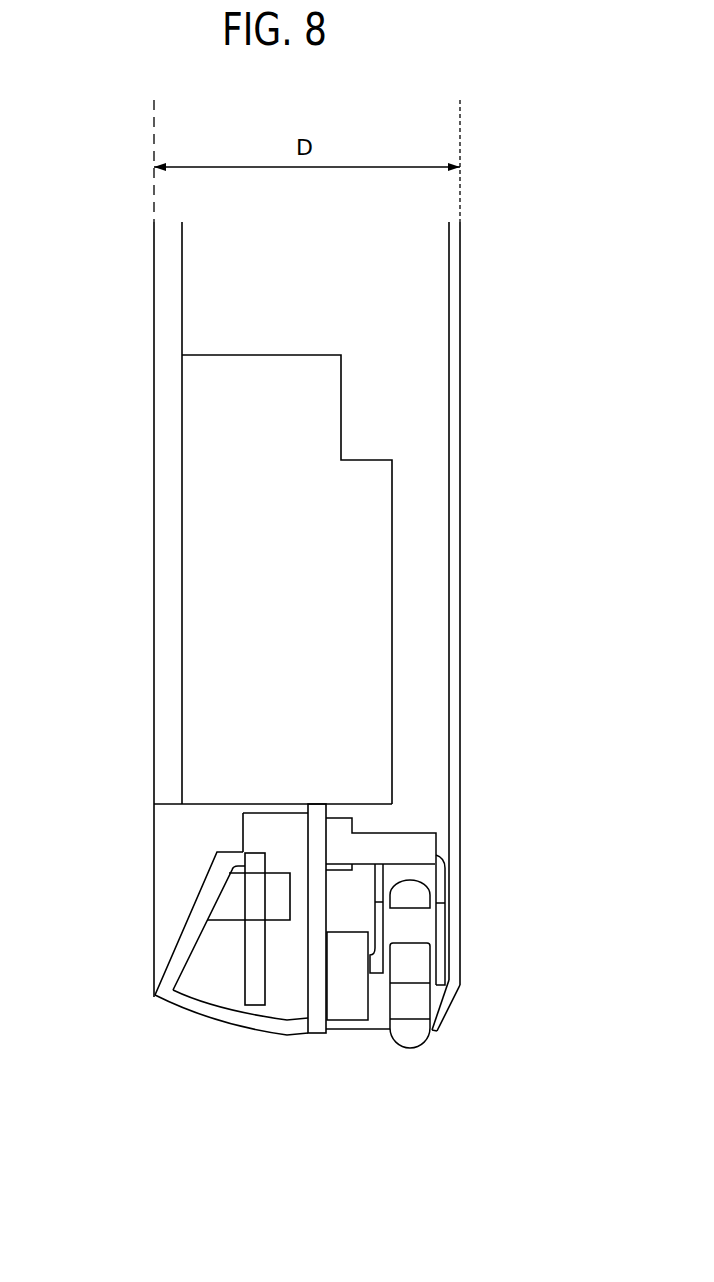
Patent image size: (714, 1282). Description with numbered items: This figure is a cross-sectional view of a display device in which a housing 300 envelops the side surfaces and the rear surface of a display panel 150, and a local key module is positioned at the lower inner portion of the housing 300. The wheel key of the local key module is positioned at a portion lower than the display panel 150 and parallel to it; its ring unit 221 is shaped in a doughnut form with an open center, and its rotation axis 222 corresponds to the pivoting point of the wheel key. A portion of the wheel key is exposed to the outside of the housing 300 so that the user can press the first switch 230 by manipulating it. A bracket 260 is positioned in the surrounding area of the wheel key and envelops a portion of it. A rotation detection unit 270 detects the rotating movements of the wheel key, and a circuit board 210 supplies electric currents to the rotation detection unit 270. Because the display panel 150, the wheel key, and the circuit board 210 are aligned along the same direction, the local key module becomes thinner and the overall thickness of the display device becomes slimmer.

The display panel 150 is at (162, 667).
The housing 300 is at (457, 403).
The circuit board 210 is at (326, 950).
The first switch 230 is at (352, 824).
The bracket 260 is at (443, 922).
The rotation axis 222 is at (422, 962).
The ring unit 221 is at (412, 1040).
The rotation detection unit 270 is at (344, 1016).